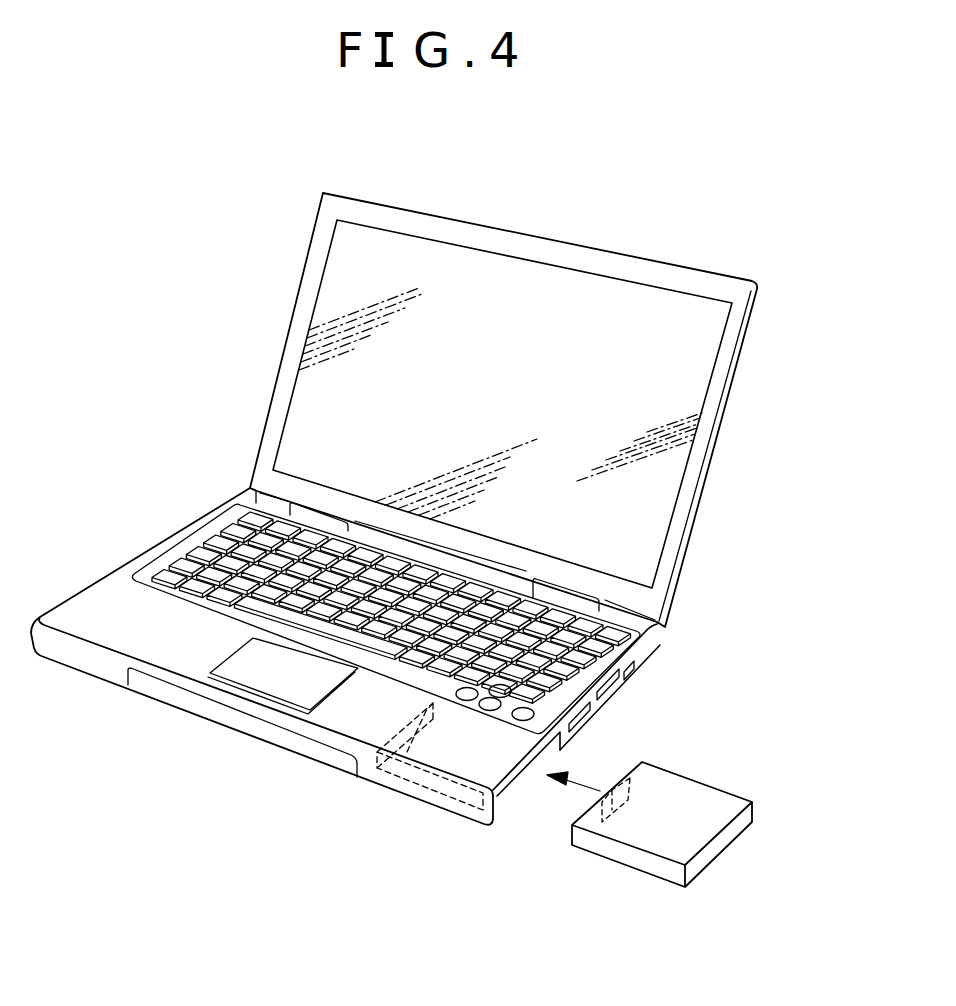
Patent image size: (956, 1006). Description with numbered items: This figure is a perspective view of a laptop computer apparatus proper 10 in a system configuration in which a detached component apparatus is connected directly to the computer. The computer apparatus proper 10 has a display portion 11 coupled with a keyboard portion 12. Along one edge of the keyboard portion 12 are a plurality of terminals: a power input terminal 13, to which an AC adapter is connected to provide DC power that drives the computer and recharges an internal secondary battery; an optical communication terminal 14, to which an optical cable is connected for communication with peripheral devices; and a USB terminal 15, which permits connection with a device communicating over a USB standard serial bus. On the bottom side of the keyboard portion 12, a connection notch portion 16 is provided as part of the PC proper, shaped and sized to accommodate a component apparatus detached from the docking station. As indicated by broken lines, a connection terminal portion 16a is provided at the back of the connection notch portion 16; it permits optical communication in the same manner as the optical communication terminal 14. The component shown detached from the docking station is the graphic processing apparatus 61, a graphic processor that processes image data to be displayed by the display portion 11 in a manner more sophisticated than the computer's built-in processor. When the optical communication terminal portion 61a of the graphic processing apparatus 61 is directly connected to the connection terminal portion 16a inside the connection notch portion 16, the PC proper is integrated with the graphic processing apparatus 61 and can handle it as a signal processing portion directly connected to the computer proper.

The computer apparatus proper 10 is at (541, 236).
The display portion 11 is at (680, 383).
The keyboard portion 12 is at (219, 546).
The power input terminal 13 is at (637, 665).
The optical communication terminal 14 is at (627, 687).
The USB terminal 15 is at (590, 712).
The connection notch portion 16 is at (523, 773).
The connection terminal portion 16a is at (437, 692).
The graphic processing apparatus 61 is at (635, 860).
The optical communication terminal portion 61a is at (613, 779).